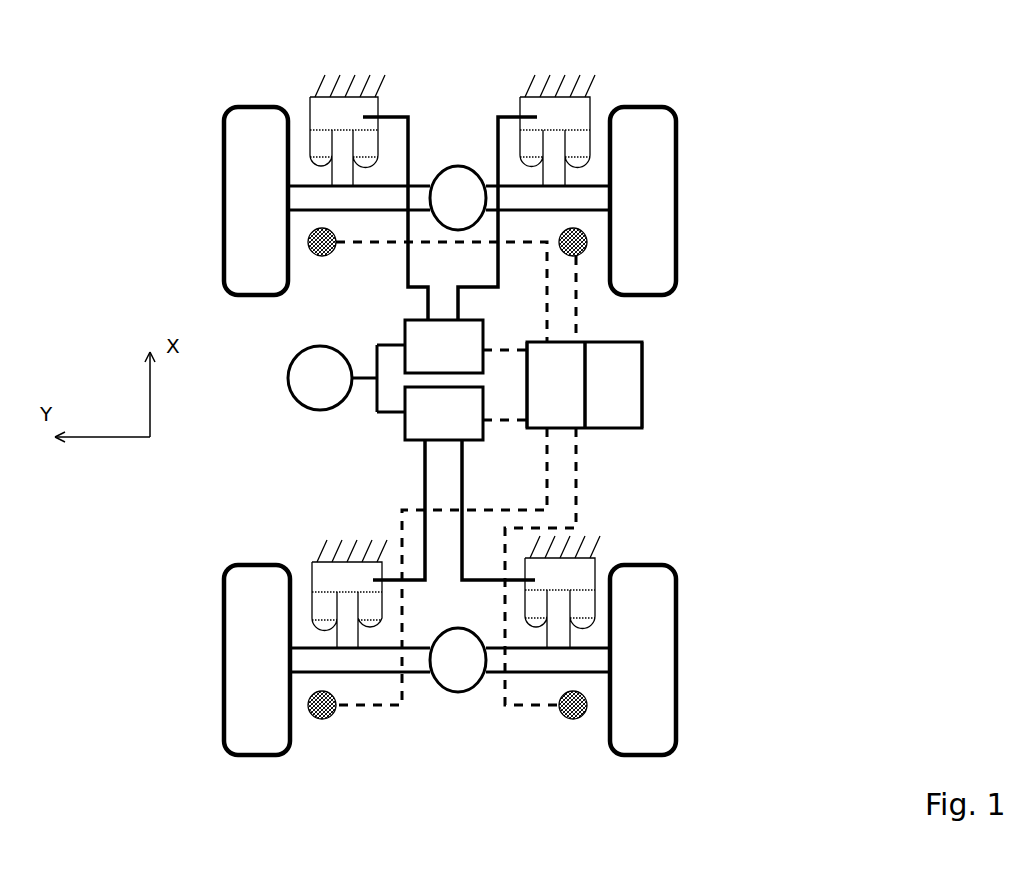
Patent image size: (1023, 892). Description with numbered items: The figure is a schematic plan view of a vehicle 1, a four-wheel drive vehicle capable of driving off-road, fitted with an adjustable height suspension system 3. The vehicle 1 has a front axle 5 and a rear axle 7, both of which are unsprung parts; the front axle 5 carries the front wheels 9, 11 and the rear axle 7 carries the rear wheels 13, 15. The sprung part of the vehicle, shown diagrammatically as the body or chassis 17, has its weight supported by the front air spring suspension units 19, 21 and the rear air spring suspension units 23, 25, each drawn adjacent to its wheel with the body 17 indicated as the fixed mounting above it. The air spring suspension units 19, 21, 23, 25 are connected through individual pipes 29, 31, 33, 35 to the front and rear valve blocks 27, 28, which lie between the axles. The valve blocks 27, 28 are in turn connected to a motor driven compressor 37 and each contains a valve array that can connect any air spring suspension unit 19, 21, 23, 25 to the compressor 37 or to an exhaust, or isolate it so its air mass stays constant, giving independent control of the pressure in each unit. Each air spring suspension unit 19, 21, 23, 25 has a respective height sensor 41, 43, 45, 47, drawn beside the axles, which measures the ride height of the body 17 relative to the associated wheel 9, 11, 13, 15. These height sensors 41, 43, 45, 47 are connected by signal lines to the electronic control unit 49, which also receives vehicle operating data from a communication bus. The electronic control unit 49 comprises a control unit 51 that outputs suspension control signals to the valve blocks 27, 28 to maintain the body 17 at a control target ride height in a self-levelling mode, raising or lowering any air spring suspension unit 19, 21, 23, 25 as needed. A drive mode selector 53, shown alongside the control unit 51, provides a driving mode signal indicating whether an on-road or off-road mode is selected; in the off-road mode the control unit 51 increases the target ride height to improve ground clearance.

The vehicle 1 is at (812, 122).
The adjustable height suspension system 3 is at (618, 80).
The front axle 5 is at (303, 200).
The rear axle 7 is at (303, 660).
The front wheel 9 is at (222, 145).
The front wheel 11 is at (668, 168).
The rear wheel 13 is at (225, 617).
The rear wheel 15 is at (665, 705).
The body or chassis 17 is at (347, 80).
The front air spring suspension unit 19 is at (310, 110).
The front air spring suspension unit 21 is at (522, 108).
The rear air spring suspension unit 23 is at (312, 568).
The rear air spring suspension unit 25 is at (595, 578).
The front valve block 27 is at (444, 346).
The rear valve block 28 is at (444, 413).
The pipe 29 is at (410, 160).
The pipe 31 is at (497, 125).
The pipe 33 is at (424, 465).
The pipe 35 is at (463, 465).
The motor driven compressor 37 is at (346, 378).
The height sensor 41 is at (333, 256).
The height sensor 43 is at (582, 254).
The height sensor 45 is at (330, 718).
The height sensor 47 is at (583, 718).
The electronic control unit 49 is at (627, 369).
The control unit 51 is at (556, 385).
The drive mode selector 53 is at (643, 360).